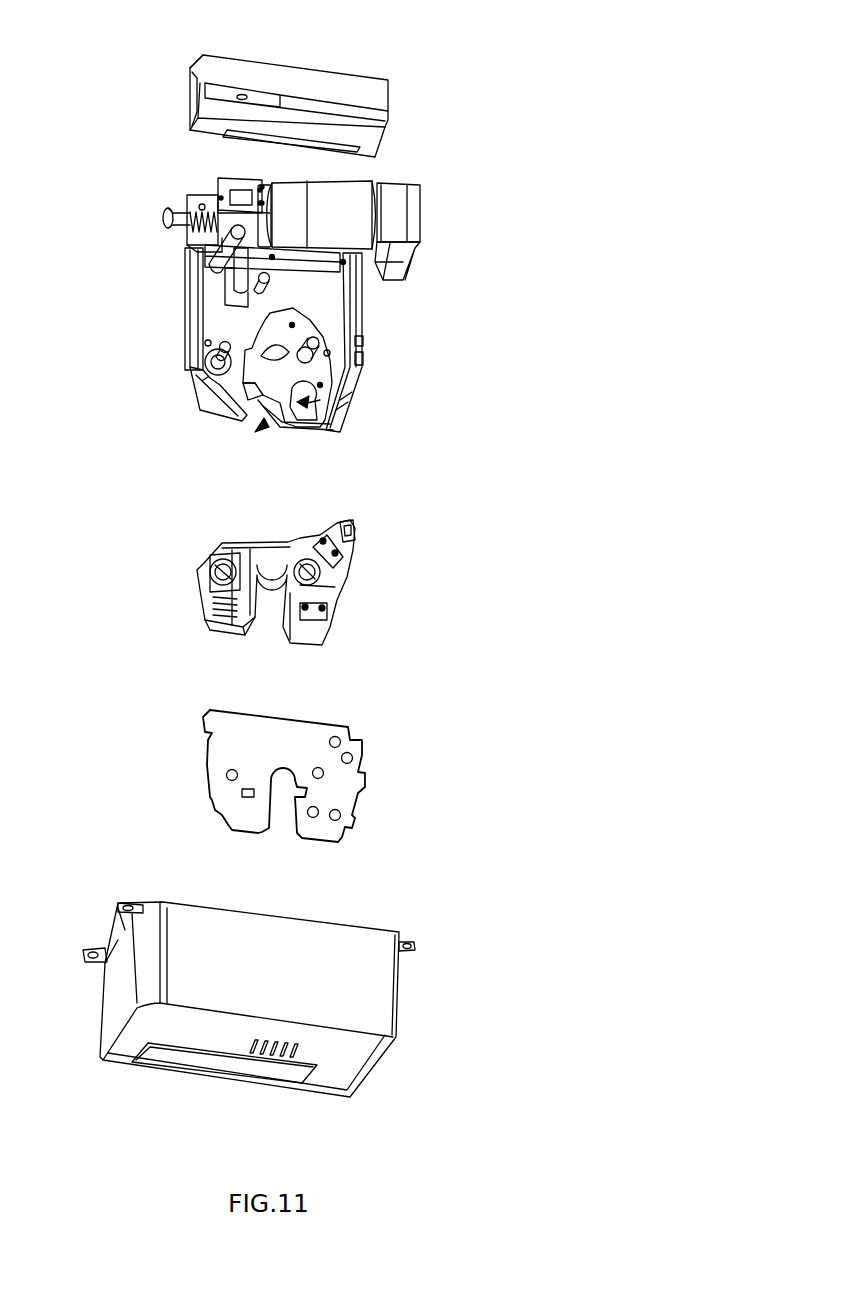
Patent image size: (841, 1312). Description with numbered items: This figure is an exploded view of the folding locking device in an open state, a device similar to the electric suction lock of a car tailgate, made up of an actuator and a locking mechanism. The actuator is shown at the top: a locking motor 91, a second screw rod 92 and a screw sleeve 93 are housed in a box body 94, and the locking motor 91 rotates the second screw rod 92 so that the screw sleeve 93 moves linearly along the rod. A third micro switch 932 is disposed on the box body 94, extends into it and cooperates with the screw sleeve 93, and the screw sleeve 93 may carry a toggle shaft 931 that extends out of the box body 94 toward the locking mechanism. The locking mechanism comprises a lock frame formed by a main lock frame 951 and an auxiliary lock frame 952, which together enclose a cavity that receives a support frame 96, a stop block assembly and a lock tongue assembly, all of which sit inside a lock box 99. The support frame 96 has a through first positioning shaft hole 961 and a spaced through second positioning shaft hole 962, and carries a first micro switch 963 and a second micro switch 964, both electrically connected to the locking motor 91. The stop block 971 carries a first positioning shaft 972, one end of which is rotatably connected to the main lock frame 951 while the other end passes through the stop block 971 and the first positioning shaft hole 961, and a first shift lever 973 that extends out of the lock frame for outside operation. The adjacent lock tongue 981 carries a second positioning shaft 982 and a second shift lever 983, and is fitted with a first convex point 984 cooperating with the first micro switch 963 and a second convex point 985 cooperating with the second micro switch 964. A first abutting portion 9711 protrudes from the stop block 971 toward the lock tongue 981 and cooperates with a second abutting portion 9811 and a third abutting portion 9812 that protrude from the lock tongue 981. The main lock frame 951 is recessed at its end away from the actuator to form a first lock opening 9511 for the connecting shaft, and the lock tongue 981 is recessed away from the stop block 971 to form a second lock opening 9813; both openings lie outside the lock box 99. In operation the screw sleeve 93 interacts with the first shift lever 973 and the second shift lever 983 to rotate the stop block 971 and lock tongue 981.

The box body 94 is at (350, 87).
The locking motor 91 is at (392, 182).
The toggle shaft 931 is at (385, 283).
The screw sleeve 93 is at (217, 190).
The third micro switch 932 is at (248, 186).
The second screw rod 92 is at (178, 216).
The stop block 971 is at (223, 313).
The first shift lever 973 is at (186, 252).
The second shift lever 983 is at (345, 270).
The first abutting portion 9711 is at (224, 343).
The main lock frame 951 is at (212, 360).
The second abutting portion 9811 is at (320, 340).
The second convex point 985 is at (362, 338).
The second positioning shaft 982 is at (365, 357).
The first convex point 984 is at (330, 380).
The lock tongue 981 is at (348, 393).
The second lock opening 9813 is at (328, 425).
The third abutting portion 9812 is at (230, 420).
The first lock opening 9511 is at (261, 427).
The first positioning shaft 972 is at (197, 367).
The support frame 96 is at (340, 578).
The first positioning shaft hole 961 is at (217, 546).
The second positioning shaft hole 962 is at (333, 532).
The second micro switch 964 is at (347, 553).
The first micro switch 963 is at (347, 602).
The auxiliary lock frame 952 is at (230, 760).
The lock box 99 is at (363, 980).